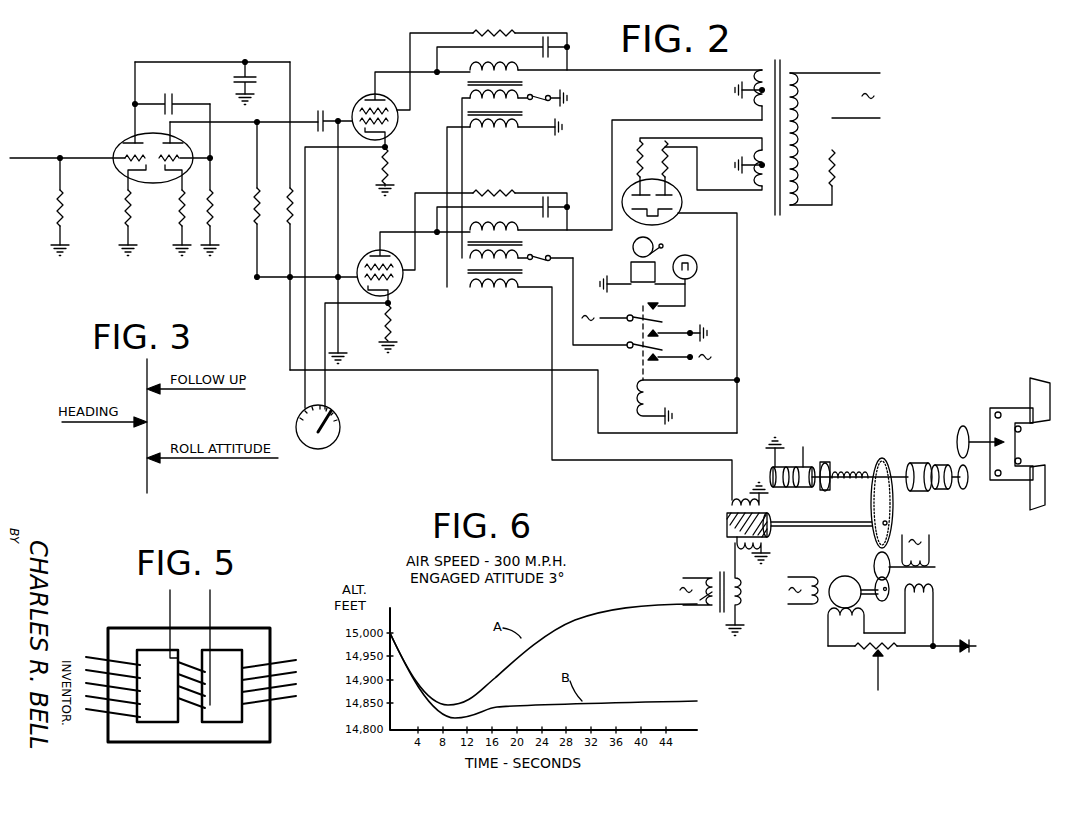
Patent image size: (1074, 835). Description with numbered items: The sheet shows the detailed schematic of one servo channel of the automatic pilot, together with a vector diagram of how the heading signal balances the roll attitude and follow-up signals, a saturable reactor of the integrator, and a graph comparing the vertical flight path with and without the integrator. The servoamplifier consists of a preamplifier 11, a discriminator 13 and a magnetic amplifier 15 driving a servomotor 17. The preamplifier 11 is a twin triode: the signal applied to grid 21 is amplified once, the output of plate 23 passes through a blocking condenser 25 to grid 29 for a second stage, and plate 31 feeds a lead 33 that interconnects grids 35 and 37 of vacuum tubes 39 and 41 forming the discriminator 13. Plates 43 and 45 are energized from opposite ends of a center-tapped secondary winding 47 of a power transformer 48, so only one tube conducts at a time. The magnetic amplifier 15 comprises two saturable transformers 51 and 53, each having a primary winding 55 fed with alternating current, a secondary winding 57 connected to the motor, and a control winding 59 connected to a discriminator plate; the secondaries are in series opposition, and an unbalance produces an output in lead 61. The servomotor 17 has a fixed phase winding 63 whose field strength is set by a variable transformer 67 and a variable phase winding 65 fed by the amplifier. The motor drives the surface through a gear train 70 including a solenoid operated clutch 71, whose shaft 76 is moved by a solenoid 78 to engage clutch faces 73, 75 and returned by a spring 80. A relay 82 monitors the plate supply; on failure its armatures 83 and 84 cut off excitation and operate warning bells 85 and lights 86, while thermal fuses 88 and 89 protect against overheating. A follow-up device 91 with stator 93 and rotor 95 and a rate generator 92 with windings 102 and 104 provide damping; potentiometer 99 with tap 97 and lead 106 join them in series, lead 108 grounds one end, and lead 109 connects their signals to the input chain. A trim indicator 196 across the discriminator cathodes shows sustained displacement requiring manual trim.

The preamplifier 11 is at (160, 129).
The discriminator 13 is at (383, 225).
The magnetic amplifier 15 is at (480, 160).
The servomotor 17 is at (715, 538).
The grid 21 is at (118, 157).
The plate 23 is at (134, 142).
The blocking condenser 25 is at (167, 92).
The grid 29 is at (178, 161).
The plate 31 is at (178, 142).
The lead 33 is at (322, 213).
The grid 35 is at (354, 117).
The grid 37 is at (392, 288).
The vacuum tube 39 is at (389, 127).
The vacuum tube 41 is at (403, 274).
The plate 43 is at (372, 95).
The plate 45 is at (371, 257).
The center-tapped secondary winding 47 is at (755, 88).
The power transformer 48 is at (760, 128).
The saturable transformer 51 is at (463, 95).
The saturable transformer 53 is at (493, 269).
The primary winding 55 is at (468, 99).
The secondary winding 57 is at (502, 133).
The control winding 59 is at (514, 71).
The lead 61 is at (552, 339).
The fixed phase winding 63 is at (763, 550).
The variable phase winding 65 is at (734, 500).
The variable transformer 67 is at (727, 572).
The gear train 70 is at (916, 511).
The solenoid operated clutch 71 is at (932, 442).
The clutch face 73 is at (956, 465).
The clutch face 75 is at (912, 462).
The shaft 76 is at (880, 464).
The solenoid 78 is at (796, 467).
The spring 80 is at (854, 480).
The relay 82 is at (646, 392).
The armature 83 is at (629, 347).
The armature 84 is at (628, 321).
The warning bell 85 is at (655, 248).
The light 86 is at (695, 266).
The thermal fuse 88 is at (838, 167).
The thermal fuse 89 is at (551, 100).
The follow-up device 91 is at (939, 577).
The rate generator 92 is at (845, 576).
The stator 93 is at (936, 590).
The rotor 95 is at (919, 558).
The tap 97 is at (854, 651).
The potentiometer 99 is at (889, 648).
The winding 102 is at (810, 585).
The winding 104 is at (832, 620).
The lead 106 is at (866, 633).
The lead 108 is at (952, 649).
The lead 109 is at (874, 676).
The trim indicator 196 is at (341, 437).